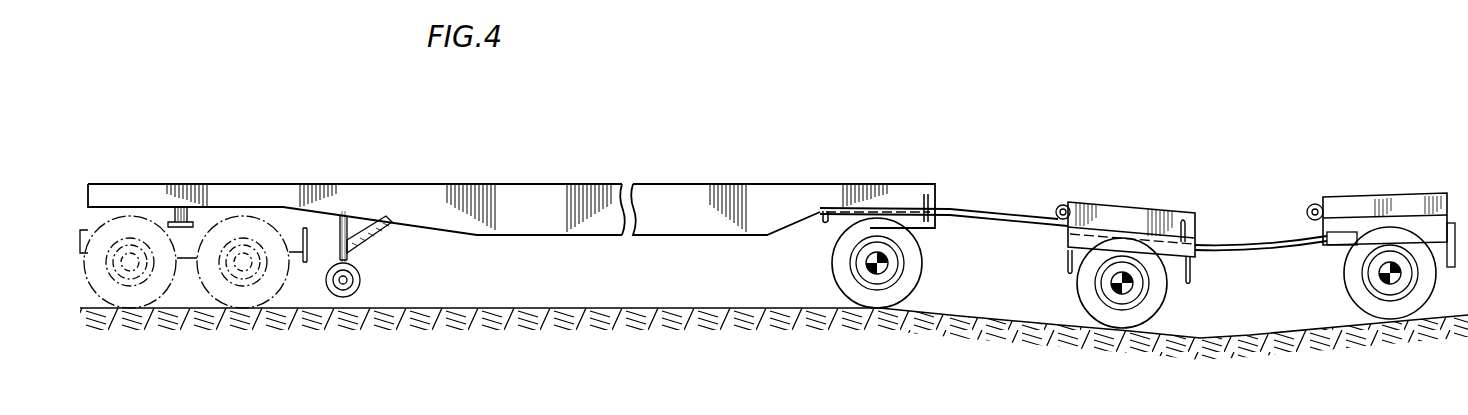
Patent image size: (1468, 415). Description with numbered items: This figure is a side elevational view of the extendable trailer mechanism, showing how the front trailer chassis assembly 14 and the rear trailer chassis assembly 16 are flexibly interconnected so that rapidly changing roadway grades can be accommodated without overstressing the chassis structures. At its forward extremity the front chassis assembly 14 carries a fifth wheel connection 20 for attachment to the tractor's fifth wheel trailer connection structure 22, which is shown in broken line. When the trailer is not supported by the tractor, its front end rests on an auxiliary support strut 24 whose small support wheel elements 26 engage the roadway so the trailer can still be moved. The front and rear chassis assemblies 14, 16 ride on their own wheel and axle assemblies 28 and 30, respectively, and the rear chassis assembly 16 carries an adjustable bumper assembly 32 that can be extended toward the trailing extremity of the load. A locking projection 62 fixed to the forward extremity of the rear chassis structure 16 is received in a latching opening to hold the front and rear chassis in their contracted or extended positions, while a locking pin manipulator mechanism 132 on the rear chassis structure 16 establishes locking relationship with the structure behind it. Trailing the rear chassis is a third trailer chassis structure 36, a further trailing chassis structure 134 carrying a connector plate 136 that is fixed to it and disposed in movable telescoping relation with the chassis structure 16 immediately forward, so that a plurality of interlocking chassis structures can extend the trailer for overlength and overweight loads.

The front trailer chassis assembly 14 is at (498, 177).
The rear trailer chassis assembly 16 is at (1146, 200).
The fifth wheel connection 20 is at (181, 207).
The fifth wheel trailer connection structure 22 is at (198, 215).
The auxiliary support strut 24 is at (336, 242).
The support wheel elements 26 is at (356, 292).
The wheel and axle assembly 28 is at (833, 280).
The wheel and axle assembly 30 is at (1088, 308).
The bumper assembly 32 is at (1198, 285).
The third trailer chassis structure 36 is at (1367, 189).
The locking projection 62 is at (1063, 204).
The locking pin manipulator mechanism 132 is at (1066, 250).
The further trailing chassis structure 134 is at (1342, 205).
The connector plate 136 is at (1250, 243).